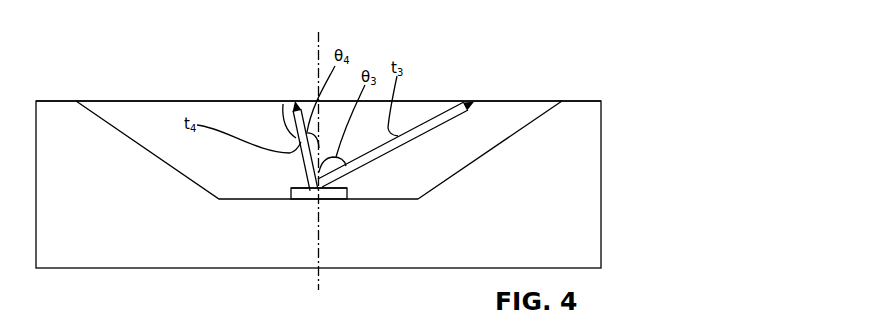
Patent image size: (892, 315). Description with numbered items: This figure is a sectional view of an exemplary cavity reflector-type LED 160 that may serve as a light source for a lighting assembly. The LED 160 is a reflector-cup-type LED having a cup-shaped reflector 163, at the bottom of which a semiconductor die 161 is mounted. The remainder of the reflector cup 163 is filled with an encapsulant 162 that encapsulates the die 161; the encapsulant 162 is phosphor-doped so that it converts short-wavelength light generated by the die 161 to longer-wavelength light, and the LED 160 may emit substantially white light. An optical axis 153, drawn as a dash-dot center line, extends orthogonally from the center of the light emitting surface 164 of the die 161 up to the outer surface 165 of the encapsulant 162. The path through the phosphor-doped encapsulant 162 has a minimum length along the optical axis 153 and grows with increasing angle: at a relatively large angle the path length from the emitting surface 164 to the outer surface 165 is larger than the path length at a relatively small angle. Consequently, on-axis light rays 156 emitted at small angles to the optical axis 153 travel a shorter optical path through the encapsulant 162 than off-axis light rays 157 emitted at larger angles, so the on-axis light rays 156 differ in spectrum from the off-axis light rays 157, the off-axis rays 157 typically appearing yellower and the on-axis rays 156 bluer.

The LED 160 is at (191, 58).
The optical axis 153 is at (318, 60).
The on-axis light rays 156 is at (292, 142).
The off-axis light rays 157 is at (404, 144).
The semiconductor die 161 is at (332, 193).
The encapsulant 162 is at (162, 134).
The cup-shaped reflector 163 is at (487, 152).
The light emitting surface 164 is at (294, 186).
The outer surface 165 is at (488, 101).